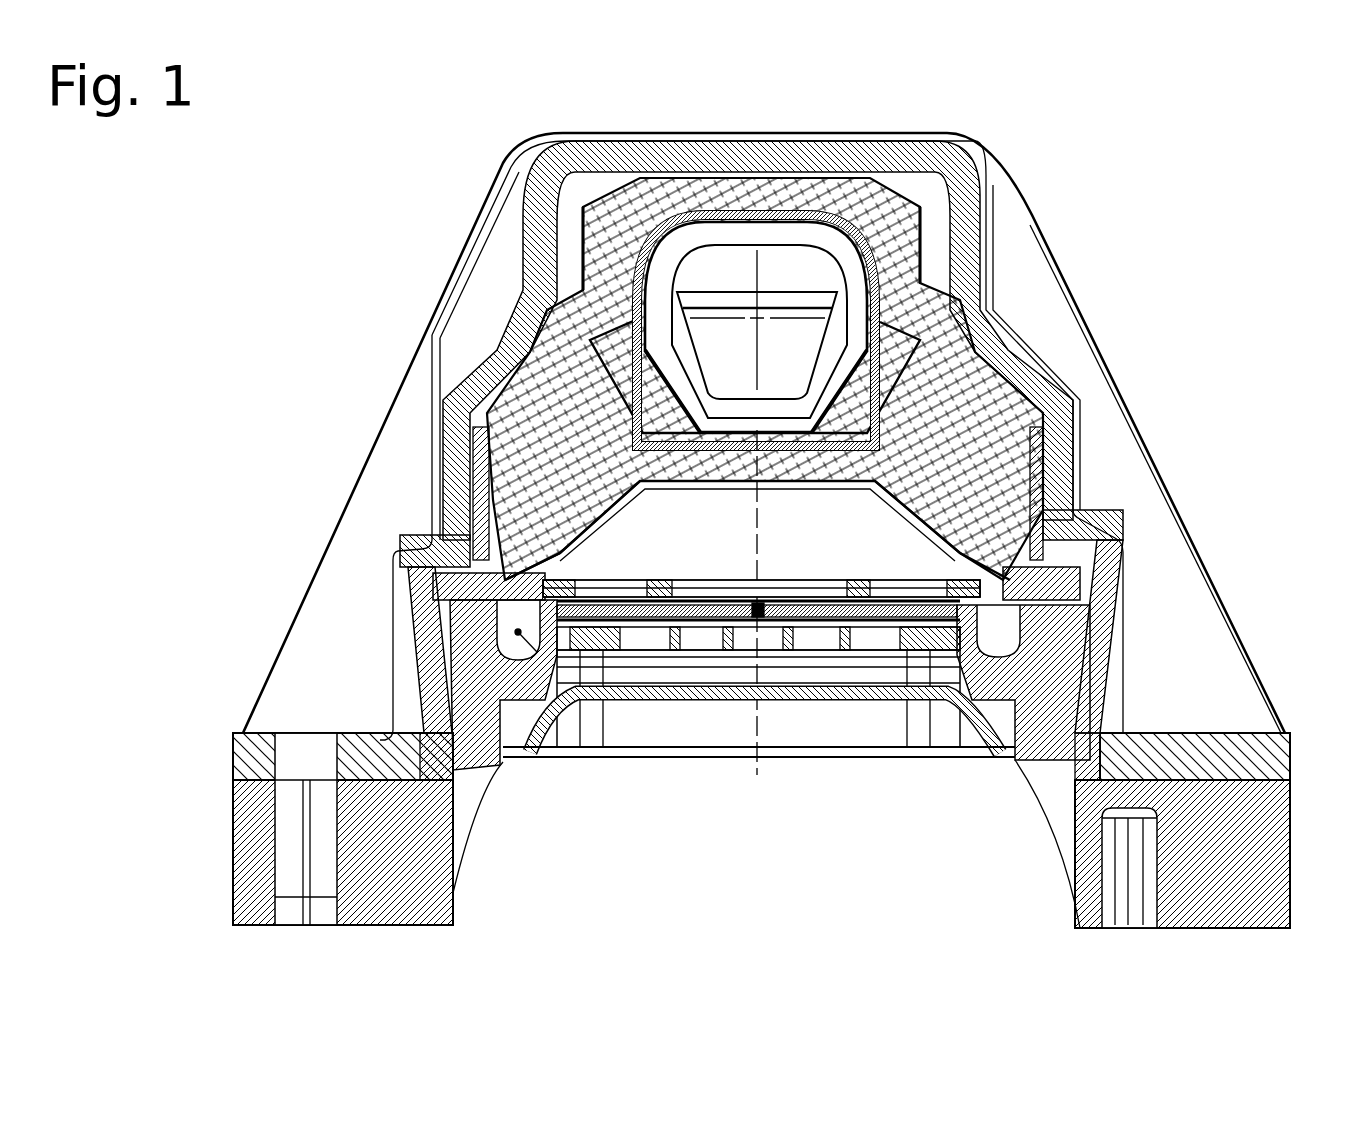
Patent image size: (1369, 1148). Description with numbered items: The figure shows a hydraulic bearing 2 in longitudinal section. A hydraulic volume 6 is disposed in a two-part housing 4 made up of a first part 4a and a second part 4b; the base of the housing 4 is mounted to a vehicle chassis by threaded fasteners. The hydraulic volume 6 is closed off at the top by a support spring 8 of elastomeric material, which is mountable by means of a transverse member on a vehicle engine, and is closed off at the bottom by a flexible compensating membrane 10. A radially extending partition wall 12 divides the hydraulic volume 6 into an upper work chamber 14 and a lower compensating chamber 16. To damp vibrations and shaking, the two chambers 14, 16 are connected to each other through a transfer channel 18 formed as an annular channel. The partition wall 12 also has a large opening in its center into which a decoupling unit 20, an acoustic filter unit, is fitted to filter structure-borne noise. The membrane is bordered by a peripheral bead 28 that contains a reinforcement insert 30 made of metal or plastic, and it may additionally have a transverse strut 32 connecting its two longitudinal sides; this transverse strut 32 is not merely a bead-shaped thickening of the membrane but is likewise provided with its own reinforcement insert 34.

The hydraulic bearing 2 is at (350, 323).
The housing 4 is at (410, 685).
The first part 4a is at (500, 345).
The second part 4b is at (420, 712).
The hydraulic volume 6 is at (888, 541).
The support spring 8 is at (1000, 395).
The compensating membrane 10 is at (876, 705).
The partition wall 12 is at (998, 632).
The work chamber 14 is at (633, 533).
The compensating chamber 16 is at (682, 676).
The transfer channel 18 is at (570, 760).
The decoupling unit 20 is at (818, 672).
The peripheral bead 28 is at (598, 758).
The reinforcement insert 30 is at (465, 565).
The transverse strut 32 is at (748, 640).
The reinforcement insert 34 is at (776, 622).